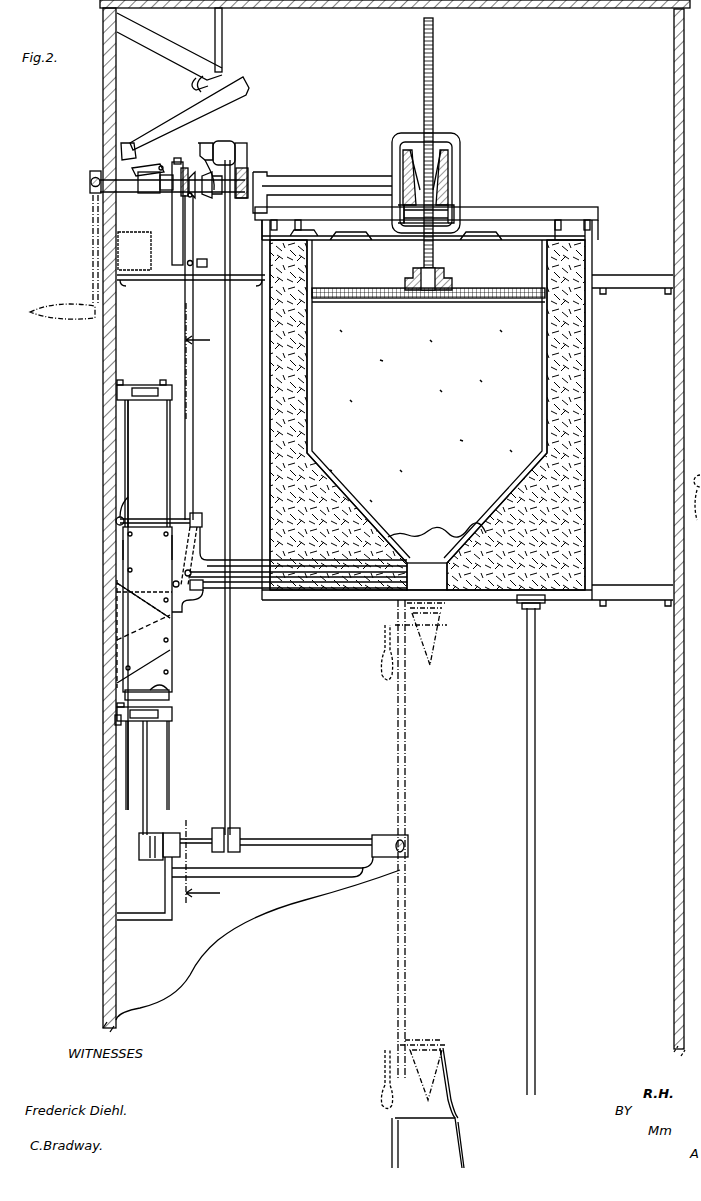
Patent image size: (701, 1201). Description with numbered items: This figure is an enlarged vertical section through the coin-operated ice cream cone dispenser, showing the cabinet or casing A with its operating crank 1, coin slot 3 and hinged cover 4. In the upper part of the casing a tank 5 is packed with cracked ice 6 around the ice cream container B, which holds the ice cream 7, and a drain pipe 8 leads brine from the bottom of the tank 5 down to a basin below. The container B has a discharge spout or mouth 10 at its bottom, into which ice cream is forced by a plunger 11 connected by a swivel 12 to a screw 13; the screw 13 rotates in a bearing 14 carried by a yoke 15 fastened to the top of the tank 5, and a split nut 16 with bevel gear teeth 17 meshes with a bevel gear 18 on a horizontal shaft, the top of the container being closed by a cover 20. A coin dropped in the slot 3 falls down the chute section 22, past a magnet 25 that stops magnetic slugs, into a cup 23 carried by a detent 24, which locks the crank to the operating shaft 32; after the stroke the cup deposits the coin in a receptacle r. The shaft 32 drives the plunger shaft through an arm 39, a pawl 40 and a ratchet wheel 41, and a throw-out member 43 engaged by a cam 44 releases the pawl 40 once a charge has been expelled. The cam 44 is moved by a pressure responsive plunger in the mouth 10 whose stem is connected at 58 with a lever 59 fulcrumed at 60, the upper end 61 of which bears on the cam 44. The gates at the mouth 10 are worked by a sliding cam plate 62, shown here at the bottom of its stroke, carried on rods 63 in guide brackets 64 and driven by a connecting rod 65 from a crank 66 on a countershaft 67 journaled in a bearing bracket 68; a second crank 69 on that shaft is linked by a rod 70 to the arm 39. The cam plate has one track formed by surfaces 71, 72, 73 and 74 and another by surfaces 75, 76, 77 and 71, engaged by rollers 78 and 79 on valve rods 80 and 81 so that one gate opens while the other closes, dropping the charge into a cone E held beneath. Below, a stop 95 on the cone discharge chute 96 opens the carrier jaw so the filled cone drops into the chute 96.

The operating crank 1 is at (92, 240).
The coin slot 3 is at (104, 20).
The removable or hinged cover 4 is at (185, 12).
The tank 5 is at (590, 345).
The cracked ice 6 is at (560, 522).
The ice cream 7 is at (421, 433).
The drain pipe 8 is at (536, 712).
The discharge spout or mouth 10 is at (427, 576).
The plunger 11 is at (492, 290).
The swivel 12 is at (438, 280).
The screw 13 is at (433, 112).
The bearing 14 is at (445, 152).
The yoke 15 is at (485, 210).
The split nut 16 is at (447, 212).
The bevel gear teeth 17 is at (432, 208).
The bevel gear 18 is at (392, 163).
The cover 20 is at (528, 240).
The coin chute section 22 is at (172, 124).
The cup 23 is at (128, 143).
The detent 24 is at (150, 168).
The magnet 25 is at (200, 88).
The operating shaft 32 is at (152, 186).
The arm 39 is at (227, 139).
The pawl 40 is at (247, 153).
The ratchet wheel 41 is at (243, 198).
The throw-out member 43 is at (206, 145).
The cam 44 is at (192, 170).
The connection 58 is at (187, 605).
The lever 59 is at (193, 470).
The fulcrum 60 is at (193, 262).
The upper end of lever 61 is at (192, 196).
The sliding cam plate 62 is at (147, 609).
The rods 63 is at (128, 760).
The guide brackets 64 is at (156, 395).
The connecting rod 65 is at (140, 815).
The crank 66 is at (140, 845).
The countershaft 67 is at (288, 840).
The bearing bracket 68 is at (245, 908).
The crank 69 is at (232, 830).
The rod 70 is at (230, 705).
The cam track surface 71 is at (172, 545).
The cam track surface 72 is at (150, 519).
The cam track surface 73 is at (124, 548).
The cam track surface 74 is at (144, 595).
The cam track surface 75 is at (170, 672).
The cam track surface 76 is at (172, 685).
The cam track surface 77 is at (153, 665).
The roller 78 is at (132, 504).
The roller 79 is at (187, 558).
The valve rod 80 is at (240, 556).
The valve rod 81 is at (236, 588).
The stop 95 is at (443, 1072).
The cone discharge chute 96 is at (448, 1138).
The cabinet or casing A is at (103, 578).
The ice cream container B is at (548, 392).
The cone E is at (436, 640).
The receptacle r is at (142, 244).